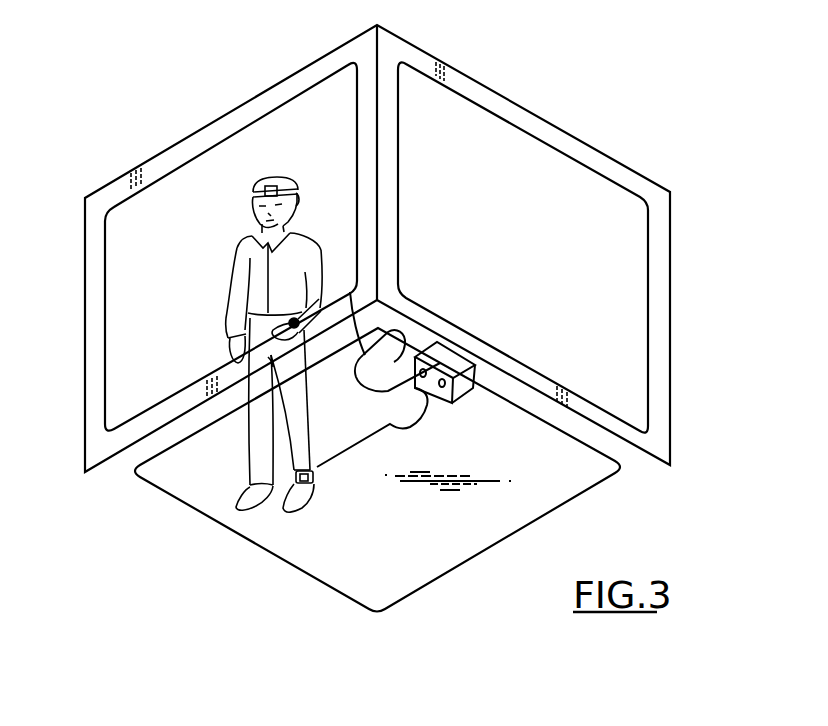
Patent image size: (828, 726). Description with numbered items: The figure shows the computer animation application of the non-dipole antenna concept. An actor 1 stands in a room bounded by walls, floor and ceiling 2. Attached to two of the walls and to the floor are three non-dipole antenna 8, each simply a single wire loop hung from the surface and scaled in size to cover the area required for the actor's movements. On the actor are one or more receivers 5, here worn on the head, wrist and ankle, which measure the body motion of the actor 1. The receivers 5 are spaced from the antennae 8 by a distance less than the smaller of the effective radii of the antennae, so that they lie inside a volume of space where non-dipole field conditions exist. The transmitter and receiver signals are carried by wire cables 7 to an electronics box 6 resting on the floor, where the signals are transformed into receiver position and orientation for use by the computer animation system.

The actor 1 is at (232, 252).
The walls, floor and ceiling 2 is at (223, 117).
The receivers 5 is at (253, 186).
The electronics box 6 is at (462, 390).
The wire cables 7 is at (392, 398).
The non-dipole antenna 8 is at (106, 367).